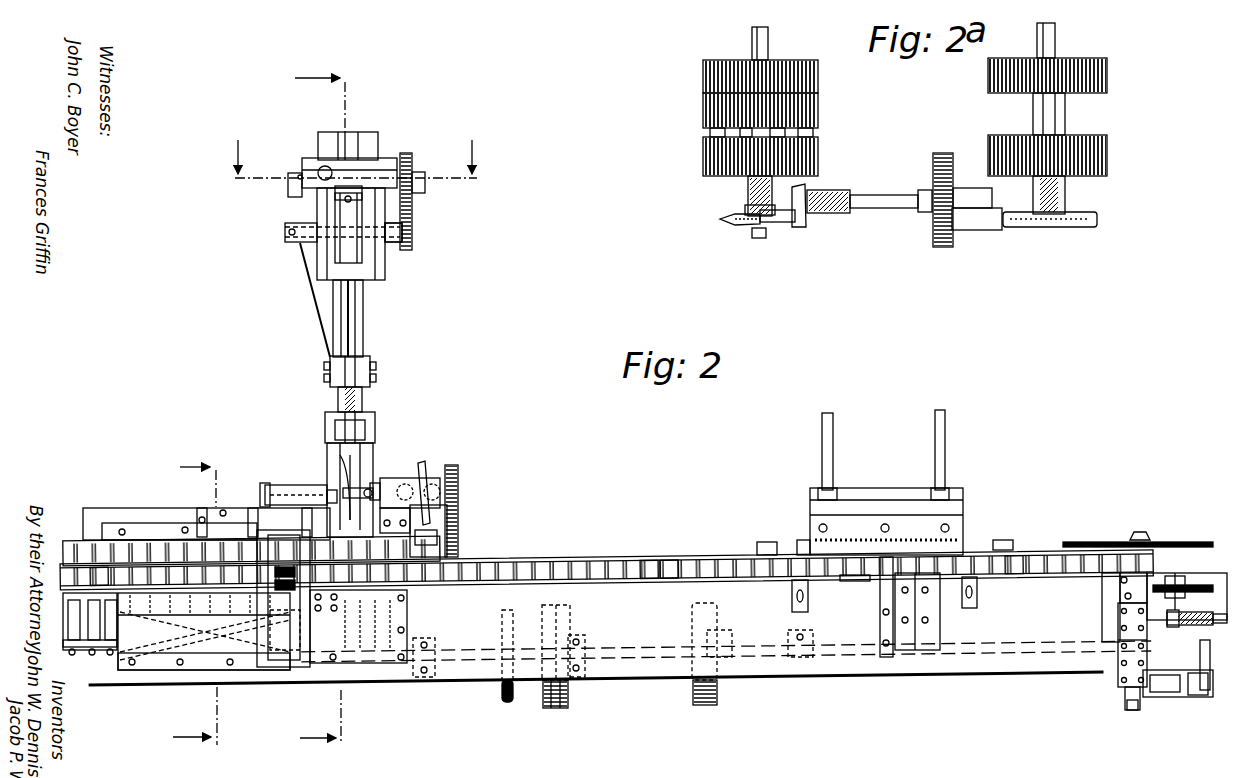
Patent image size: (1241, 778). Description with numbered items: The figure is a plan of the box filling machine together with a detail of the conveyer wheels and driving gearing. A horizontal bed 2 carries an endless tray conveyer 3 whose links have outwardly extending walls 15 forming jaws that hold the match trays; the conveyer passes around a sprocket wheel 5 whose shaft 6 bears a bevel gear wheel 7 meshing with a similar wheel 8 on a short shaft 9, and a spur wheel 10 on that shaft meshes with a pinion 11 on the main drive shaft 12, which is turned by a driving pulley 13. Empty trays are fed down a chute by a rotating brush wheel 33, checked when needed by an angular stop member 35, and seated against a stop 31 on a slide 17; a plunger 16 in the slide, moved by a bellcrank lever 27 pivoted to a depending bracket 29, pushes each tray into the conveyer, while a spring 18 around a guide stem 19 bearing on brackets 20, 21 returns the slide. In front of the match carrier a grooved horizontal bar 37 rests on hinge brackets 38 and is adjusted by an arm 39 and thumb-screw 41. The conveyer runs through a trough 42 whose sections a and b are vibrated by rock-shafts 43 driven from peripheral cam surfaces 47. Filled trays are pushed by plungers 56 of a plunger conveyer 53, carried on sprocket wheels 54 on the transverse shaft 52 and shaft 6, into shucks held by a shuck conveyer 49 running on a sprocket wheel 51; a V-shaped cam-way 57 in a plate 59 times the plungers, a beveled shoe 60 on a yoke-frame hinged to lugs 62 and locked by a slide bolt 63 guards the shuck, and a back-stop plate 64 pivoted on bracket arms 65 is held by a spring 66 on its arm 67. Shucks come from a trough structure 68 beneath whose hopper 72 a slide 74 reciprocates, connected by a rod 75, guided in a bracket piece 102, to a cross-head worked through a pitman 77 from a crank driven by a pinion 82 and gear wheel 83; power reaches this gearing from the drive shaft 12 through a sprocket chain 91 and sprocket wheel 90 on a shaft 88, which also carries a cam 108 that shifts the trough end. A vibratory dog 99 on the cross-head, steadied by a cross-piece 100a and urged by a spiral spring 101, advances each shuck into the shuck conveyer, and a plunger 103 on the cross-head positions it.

In FIG. 2, the horizontal bed 2 is at (842, 660).
In FIG. 2, the tray conveyer 3 is at (525, 570).
In FIG. 2A, the sprocket wheel 5 is at (712, 110).
In FIG. 2A, the shaft 6 is at (770, 45).
In FIG. 2A, the bevel gear wheel 7 is at (738, 222).
In FIG. 2A, the bevel gear wheel 8 is at (800, 220).
In FIG. 2, the bevel gear wheel 8 is at (198, 603).
In FIG. 2A, the short shaft 9 is at (888, 208).
In FIG. 2A, the spur wheel 10 is at (942, 248).
In FIG. 2, the pinion 11 is at (329, 411).
In FIG. 2A, the main drive shaft 12 is at (1060, 228).
In FIG. 2, the driving pulley 13 is at (361, 165).
In FIG. 2, the outwardly extending walls 15 is at (668, 563).
In FIG. 2, the plunger 16 is at (1133, 710).
In FIG. 2, the slide 17 is at (1120, 678).
In FIG. 2, the spring 18 is at (1188, 626).
In FIG. 2, the guide stem 19 is at (1218, 624).
In FIG. 2, the bracket 20 is at (1215, 665).
In FIG. 2, the bracket 21 is at (1170, 615).
In FIG. 2, the bellcrank lever 27 is at (1127, 705).
In FIG. 2, the depending bracket 29 is at (1197, 698).
In FIG. 2, the stop 31 is at (1118, 575).
In FIG. 2, the brush wheel 33 is at (1205, 585).
In FIG. 2, the angular stop member 35 is at (1148, 585).
In FIG. 2, the horizontal bar 37 is at (853, 580).
In FIG. 2, the hinge brackets 38 is at (808, 598).
In FIG. 2, the arm 39 is at (918, 611).
In FIG. 2, the thumb-screw 41 is at (898, 618).
In FIG. 2, the trough 42 is at (588, 568).
In FIG. 2, the rock-shafts 43 is at (657, 652).
In FIG. 2, the peripheral cam surfaces 47 is at (558, 710).
In FIG. 2, the shuck conveyer 49 is at (127, 545).
In FIG. 2A, the sprocket wheel 51 is at (708, 78).
In FIG. 2A, the transverse shaft 52 is at (1058, 45).
In FIG. 2, the plunger conveyer 53 is at (93, 652).
In FIG. 2A, the sprocket wheels 54 is at (708, 157).
In FIG. 2, the plungers 56 is at (108, 654).
In FIG. 2, the V-shaped cam-way 57 is at (195, 600).
In FIG. 2, the plate 59 is at (230, 635).
In FIG. 2, the shoe 60 is at (268, 520).
In FIG. 2, the lugs 62 is at (292, 652).
In FIG. 2, the slide bolt 63 is at (410, 612).
In FIG. 2, the plate 64 is at (298, 518).
In FIG. 2, the bracket arms 65 is at (256, 518).
In FIG. 2, the spring 66 is at (205, 520).
In FIG. 2, the arm 67 is at (207, 512).
In FIG. 2, the trough structure 68 is at (365, 326).
In FIG. 2, the hopper 72 is at (340, 187).
In FIG. 2, the slide 74 is at (358, 132).
In FIG. 2, the rod 75 is at (353, 306).
In FIG. 2, the pitman 77 is at (312, 317).
In FIG. 2, the pinion 82 is at (402, 235).
In FIG. 2, the gear wheel 83 is at (412, 165).
In FIG. 2, the shaft 88 is at (355, 490).
In FIG. 2A, the sprocket wheel 90 is at (1108, 70).
In FIG. 2, the sprocket wheel 90 is at (455, 490).
In FIG. 2, the sprocket chain 91 is at (458, 508).
In FIG. 2, the vibratory dog 99 is at (372, 468).
In FIG. 2, the cross-piece 100a is at (378, 470).
In FIG. 2, the spiral spring 101 is at (375, 420).
In FIG. 2, the bracket piece 102 is at (367, 373).
In FIG. 2, the plunger 103 is at (327, 452).
In FIG. 2, the cam 108 is at (428, 470).
In FIG. 2, the trough section a is at (793, 548).
In FIG. 2, the trough section b is at (648, 560).